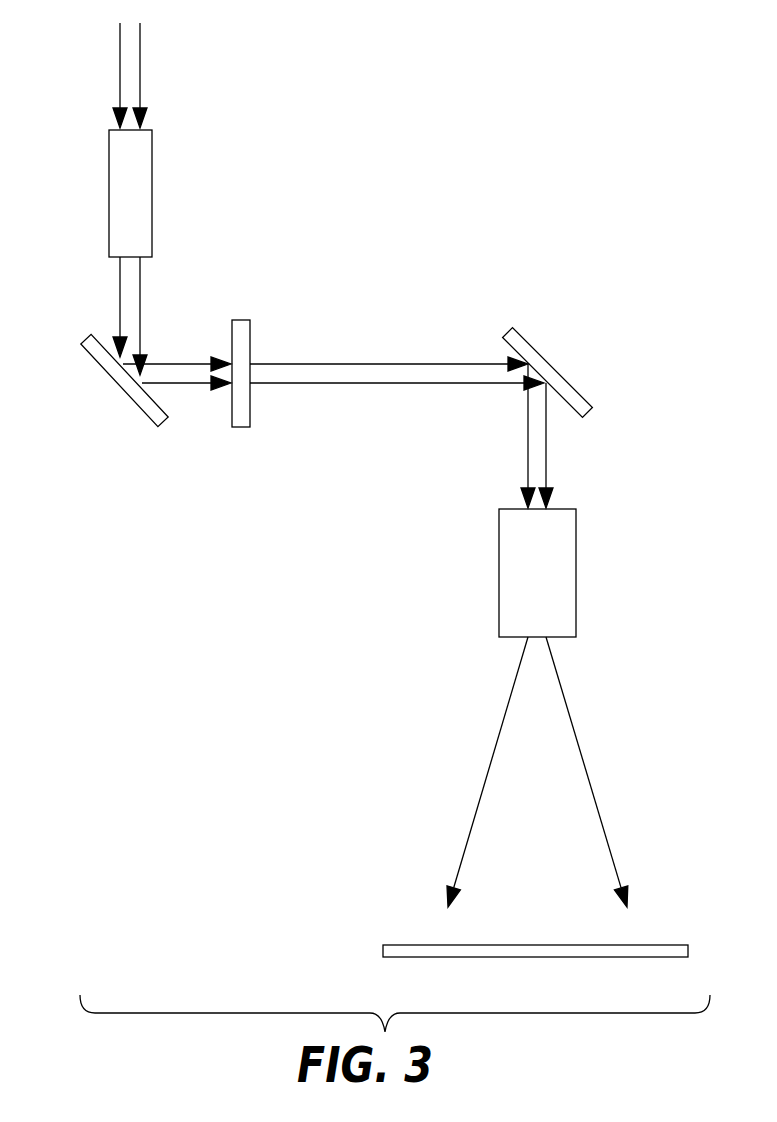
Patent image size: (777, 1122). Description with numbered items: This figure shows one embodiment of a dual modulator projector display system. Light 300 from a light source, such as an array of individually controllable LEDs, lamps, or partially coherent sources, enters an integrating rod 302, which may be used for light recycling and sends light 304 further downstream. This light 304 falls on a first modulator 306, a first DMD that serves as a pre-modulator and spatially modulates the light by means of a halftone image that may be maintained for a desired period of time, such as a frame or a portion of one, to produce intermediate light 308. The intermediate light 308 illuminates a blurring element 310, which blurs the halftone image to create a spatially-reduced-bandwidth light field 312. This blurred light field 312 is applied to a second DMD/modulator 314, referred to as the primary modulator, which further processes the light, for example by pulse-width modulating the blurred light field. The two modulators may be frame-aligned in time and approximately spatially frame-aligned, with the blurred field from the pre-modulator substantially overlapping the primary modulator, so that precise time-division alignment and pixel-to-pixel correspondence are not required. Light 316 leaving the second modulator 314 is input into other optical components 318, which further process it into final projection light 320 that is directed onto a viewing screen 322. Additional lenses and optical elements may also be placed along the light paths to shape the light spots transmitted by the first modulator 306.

The light 300 is at (118, 52).
The integrating rod 302 is at (109, 170).
The light 304 is at (119, 310).
The first modulator 306 is at (110, 382).
The intermediate light 308 is at (207, 363).
The blurring element 310 is at (240, 320).
The spatially-reduced-bandwidth light field 312 is at (393, 362).
The second DMD/modulator 314 is at (537, 348).
The light 316 is at (525, 425).
The other optical components 318 is at (499, 545).
The final projection light 320 is at (493, 750).
The viewing screen 322 is at (570, 945).